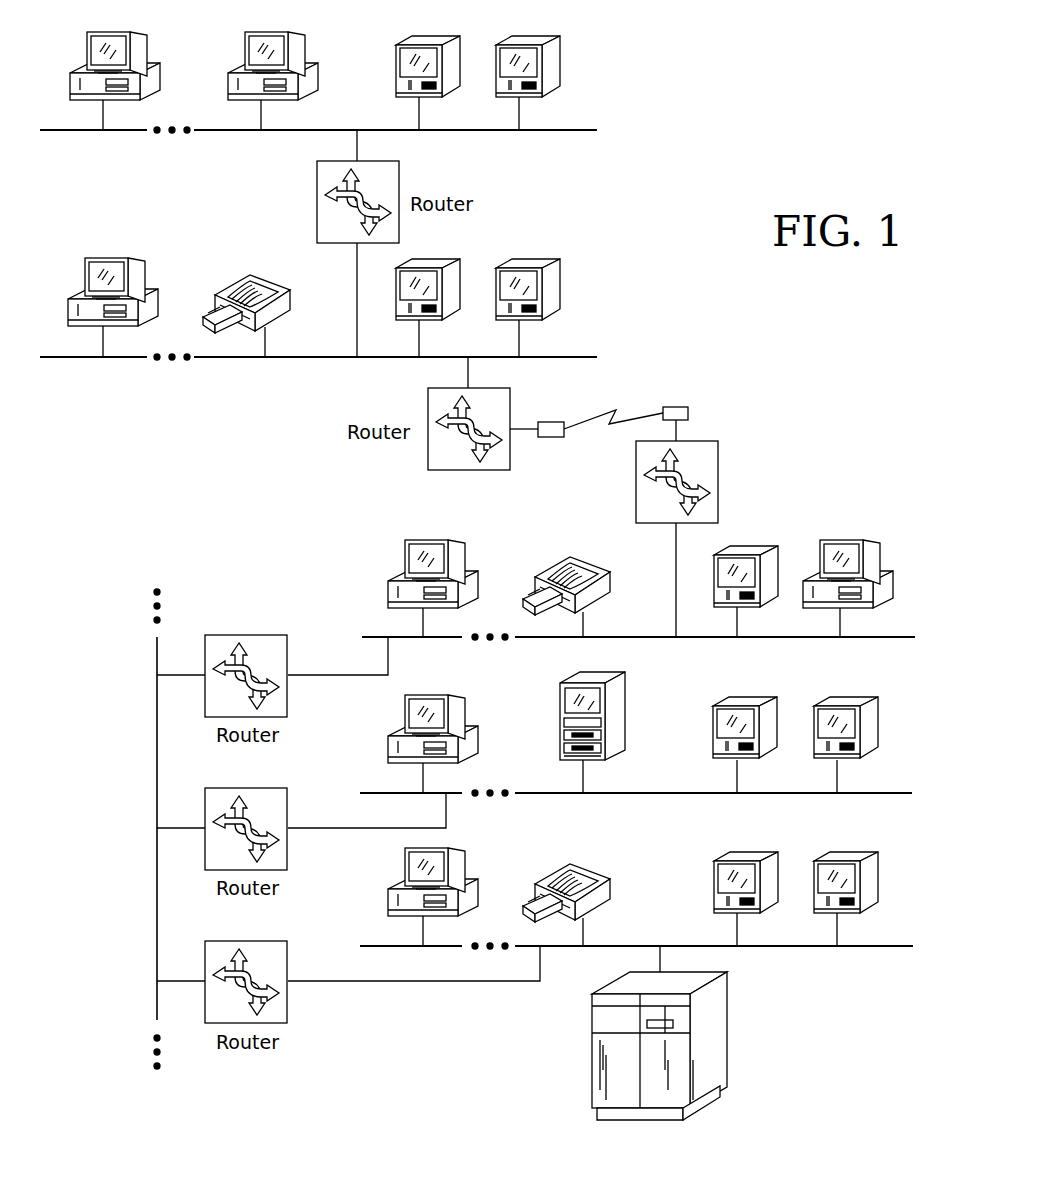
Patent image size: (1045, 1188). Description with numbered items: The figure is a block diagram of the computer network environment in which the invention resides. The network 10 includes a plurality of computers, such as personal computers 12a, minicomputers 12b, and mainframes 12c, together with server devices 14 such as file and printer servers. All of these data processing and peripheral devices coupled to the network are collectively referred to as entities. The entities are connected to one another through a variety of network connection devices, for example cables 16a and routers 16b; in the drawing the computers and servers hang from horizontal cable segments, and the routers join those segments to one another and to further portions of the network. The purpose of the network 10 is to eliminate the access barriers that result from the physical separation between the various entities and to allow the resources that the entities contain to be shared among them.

The network 10 is at (88, 810).
The personal computers 12a is at (396, 52).
The minicomputers 12b is at (882, 572).
The mainframes 12c is at (592, 1065).
The server devices 14 is at (80, 72).
The cables 16a is at (229, 132).
The routers 16b is at (716, 442).